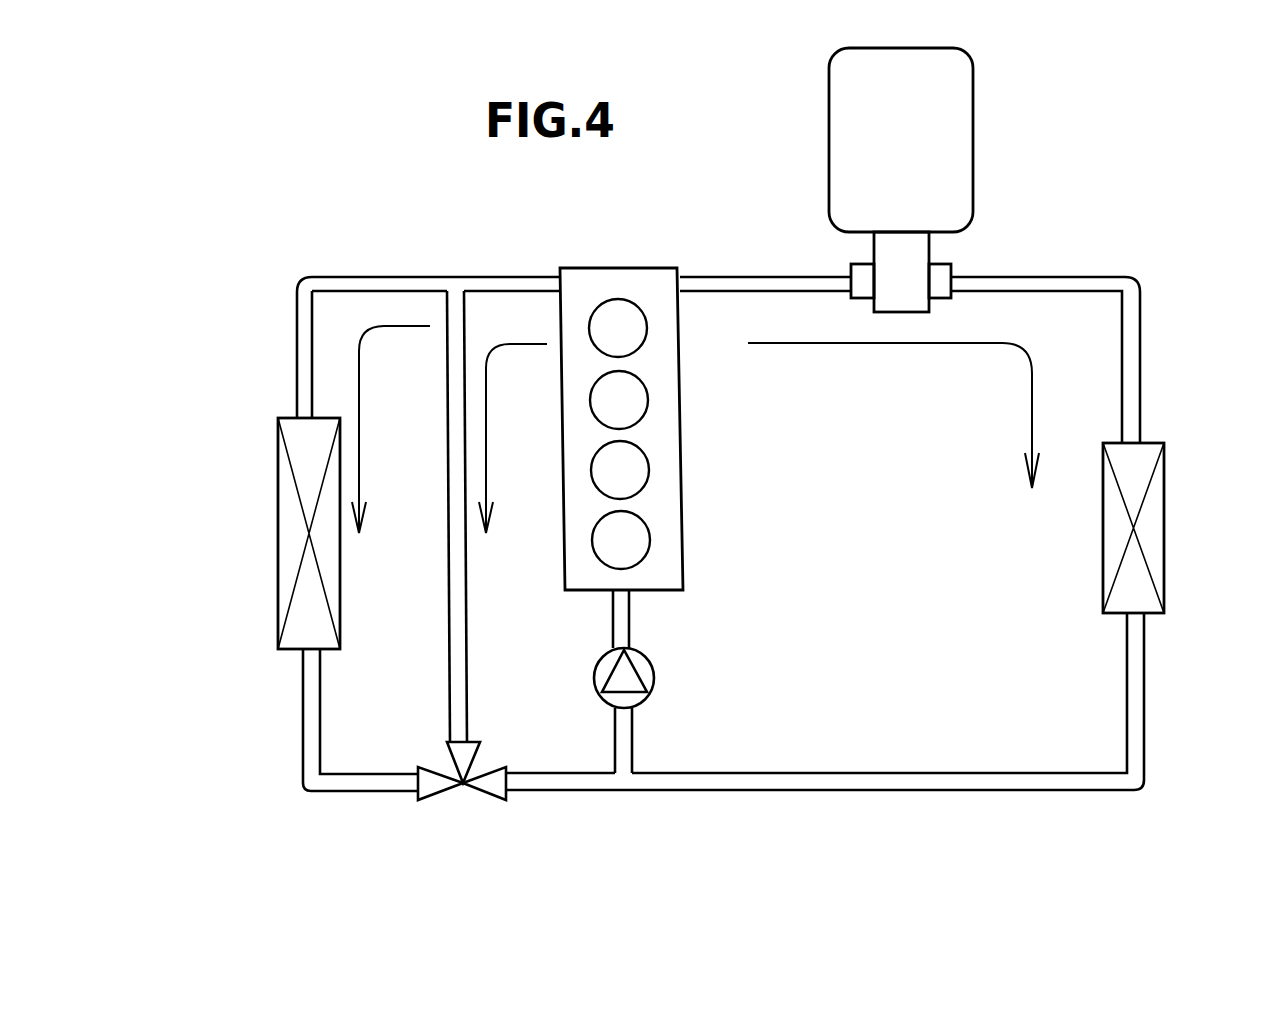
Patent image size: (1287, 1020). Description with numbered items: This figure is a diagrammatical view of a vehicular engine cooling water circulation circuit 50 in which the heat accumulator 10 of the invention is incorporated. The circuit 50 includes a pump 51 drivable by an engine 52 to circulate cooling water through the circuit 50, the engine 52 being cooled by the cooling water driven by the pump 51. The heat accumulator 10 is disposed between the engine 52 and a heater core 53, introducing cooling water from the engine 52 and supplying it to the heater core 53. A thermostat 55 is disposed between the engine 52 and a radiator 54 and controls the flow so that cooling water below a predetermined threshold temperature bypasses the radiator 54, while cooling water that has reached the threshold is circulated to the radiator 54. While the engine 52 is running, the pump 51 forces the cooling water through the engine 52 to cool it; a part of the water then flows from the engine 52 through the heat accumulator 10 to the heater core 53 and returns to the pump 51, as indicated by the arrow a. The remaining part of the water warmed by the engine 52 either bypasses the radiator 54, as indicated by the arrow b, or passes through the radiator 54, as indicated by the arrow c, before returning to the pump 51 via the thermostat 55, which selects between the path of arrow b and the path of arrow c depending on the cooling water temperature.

The heat accumulator 10 is at (983, 93).
The engine cooling water circulation circuit 50 is at (1145, 255).
The pump 51 is at (653, 662).
The engine 52 is at (683, 548).
The heater core 53 is at (1164, 517).
The radiator 54 is at (278, 555).
The thermostat 55 is at (480, 797).
The arrow a is at (875, 343).
The arrow b is at (486, 390).
The arrow c is at (359, 382).